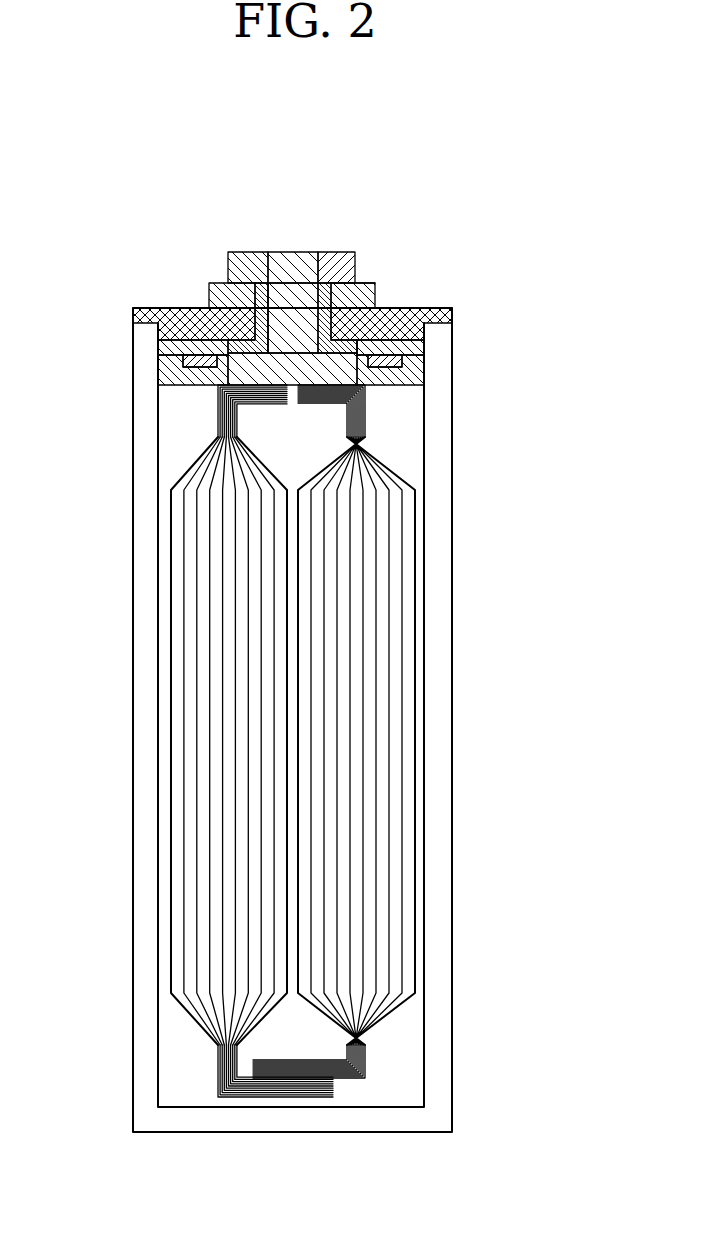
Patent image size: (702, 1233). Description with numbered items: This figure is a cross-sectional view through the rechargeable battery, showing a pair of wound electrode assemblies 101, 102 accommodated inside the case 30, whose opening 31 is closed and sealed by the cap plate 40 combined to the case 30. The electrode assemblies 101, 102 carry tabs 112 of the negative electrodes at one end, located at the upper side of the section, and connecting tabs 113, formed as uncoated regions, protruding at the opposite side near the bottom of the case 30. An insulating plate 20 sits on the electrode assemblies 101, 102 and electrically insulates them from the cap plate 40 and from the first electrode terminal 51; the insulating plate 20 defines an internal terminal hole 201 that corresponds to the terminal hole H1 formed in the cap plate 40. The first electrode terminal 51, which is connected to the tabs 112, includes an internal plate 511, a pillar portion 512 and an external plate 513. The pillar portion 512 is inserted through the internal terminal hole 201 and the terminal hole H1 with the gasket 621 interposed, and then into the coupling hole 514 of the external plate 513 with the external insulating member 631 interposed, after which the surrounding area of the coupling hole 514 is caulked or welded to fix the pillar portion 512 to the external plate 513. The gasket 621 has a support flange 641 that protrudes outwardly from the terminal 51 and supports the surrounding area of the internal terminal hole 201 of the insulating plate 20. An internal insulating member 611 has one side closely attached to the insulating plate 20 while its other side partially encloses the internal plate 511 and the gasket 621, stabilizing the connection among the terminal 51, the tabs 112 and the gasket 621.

The insulating plate 20 is at (168, 345).
The internal terminal hole 201 is at (360, 347).
The case 30 is at (458, 598).
The opening 31 is at (417, 310).
The cap plate 40 is at (175, 322).
The first electrode terminal 51 is at (292, 261).
The internal plate 511 is at (268, 254).
The pillar portion 512 is at (297, 287).
The external plate 513 is at (334, 231).
The coupling hole 514 is at (265, 290).
The terminal hole H1 is at (268, 308).
The internal insulating member 611 is at (405, 373).
The gasket 621 is at (348, 292).
The external insulating member 631 is at (363, 284).
The support flange 641 is at (202, 360).
The electrode assembly 101 is at (414, 545).
The electrode assembly 102 is at (172, 545).
The tab 112 is at (347, 420).
The connecting tab 113 is at (337, 1080).